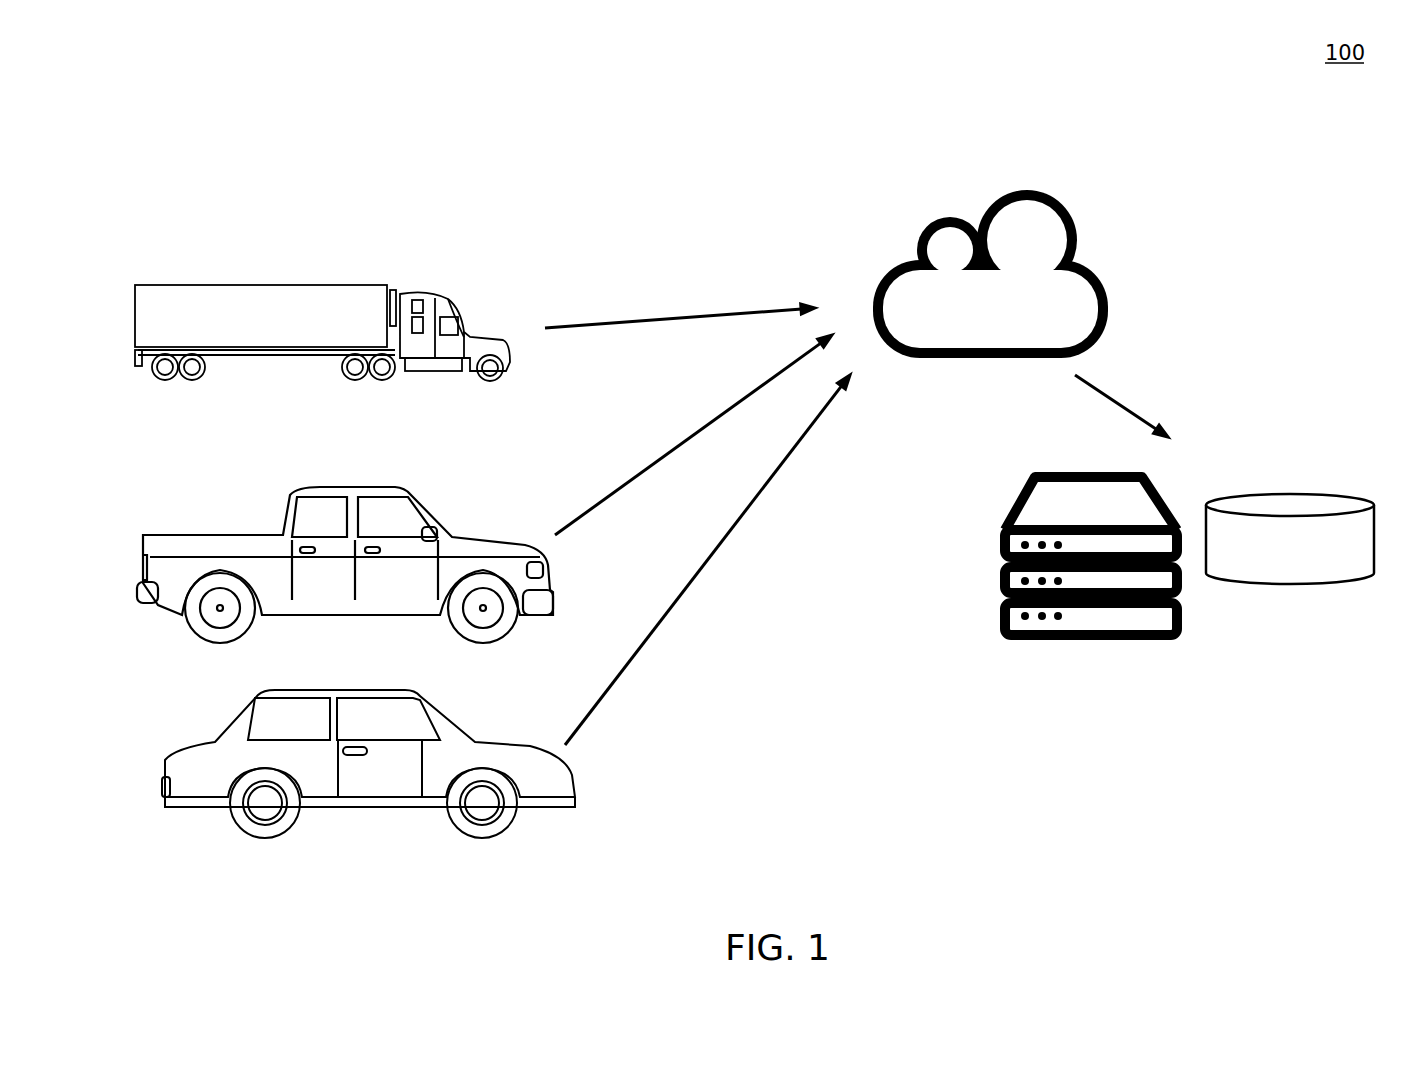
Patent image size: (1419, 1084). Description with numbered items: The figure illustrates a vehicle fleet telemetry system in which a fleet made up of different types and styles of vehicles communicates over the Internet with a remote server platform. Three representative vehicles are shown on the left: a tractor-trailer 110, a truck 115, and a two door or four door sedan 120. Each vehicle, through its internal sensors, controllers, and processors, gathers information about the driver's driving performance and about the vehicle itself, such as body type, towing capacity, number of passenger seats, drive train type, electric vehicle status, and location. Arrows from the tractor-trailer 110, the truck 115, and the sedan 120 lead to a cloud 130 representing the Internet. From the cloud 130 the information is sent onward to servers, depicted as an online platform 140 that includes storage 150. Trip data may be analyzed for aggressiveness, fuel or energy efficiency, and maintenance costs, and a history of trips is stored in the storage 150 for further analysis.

The tractor-trailer 110 is at (288, 288).
The truck 115 is at (283, 490).
The sedan 120 is at (220, 740).
The cloud 130 is at (890, 258).
The online platform 140 is at (1000, 615).
The storage 150 is at (1297, 583).